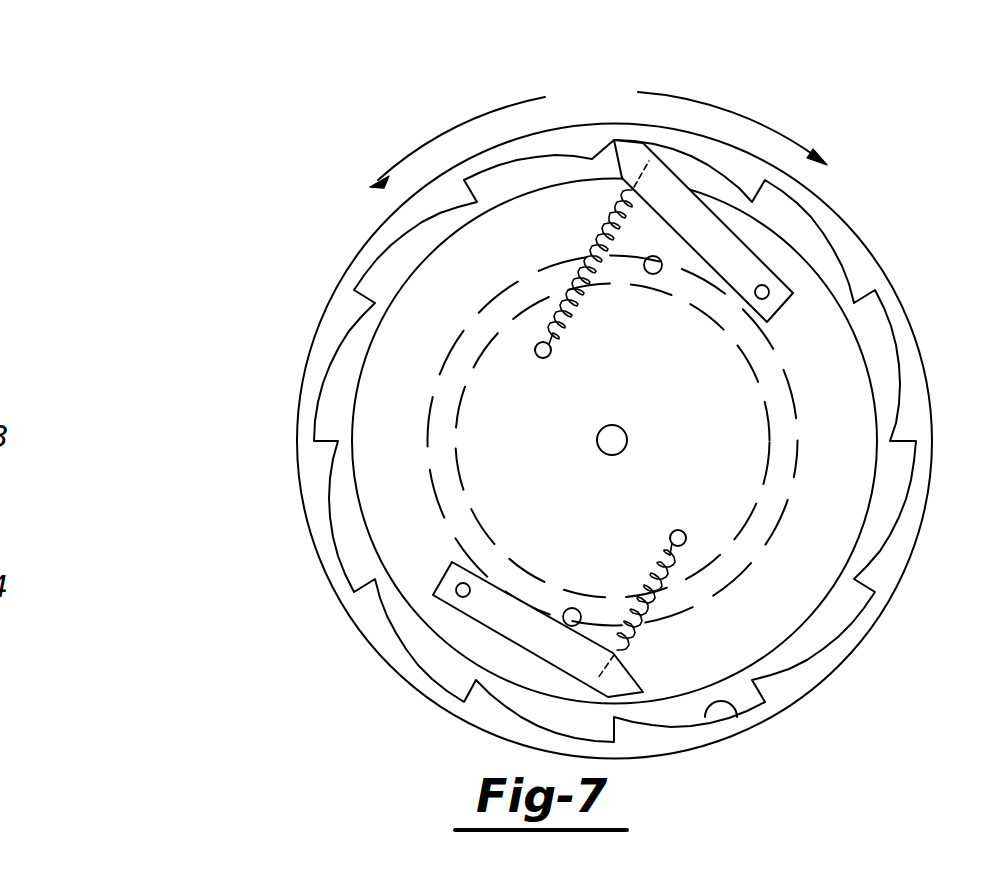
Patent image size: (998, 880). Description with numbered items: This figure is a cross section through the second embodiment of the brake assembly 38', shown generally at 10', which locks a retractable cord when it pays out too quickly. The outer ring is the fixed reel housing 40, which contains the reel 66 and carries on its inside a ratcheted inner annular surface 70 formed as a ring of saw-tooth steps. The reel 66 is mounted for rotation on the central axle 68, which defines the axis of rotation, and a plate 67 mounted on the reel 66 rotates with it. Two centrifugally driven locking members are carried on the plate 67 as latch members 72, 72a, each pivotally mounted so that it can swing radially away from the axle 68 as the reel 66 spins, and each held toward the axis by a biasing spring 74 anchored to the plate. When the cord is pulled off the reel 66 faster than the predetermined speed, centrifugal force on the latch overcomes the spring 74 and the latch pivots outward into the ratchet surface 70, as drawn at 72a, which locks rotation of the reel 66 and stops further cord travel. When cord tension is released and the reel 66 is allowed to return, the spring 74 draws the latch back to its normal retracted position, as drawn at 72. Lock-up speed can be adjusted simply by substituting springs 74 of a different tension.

The brake assembly 10' is at (598, 115).
The brake assembly 38' is at (630, 439).
The reel housing 40 is at (913, 328).
The reel 66 is at (767, 540).
The plate 67 is at (868, 462).
The axle 68 is at (623, 429).
The ratcheted inner annular surface 70 is at (733, 703).
The latch member 72 is at (527, 604).
The latch member engaging ratchet 72a is at (688, 236).
The biasing spring 74 is at (578, 260).